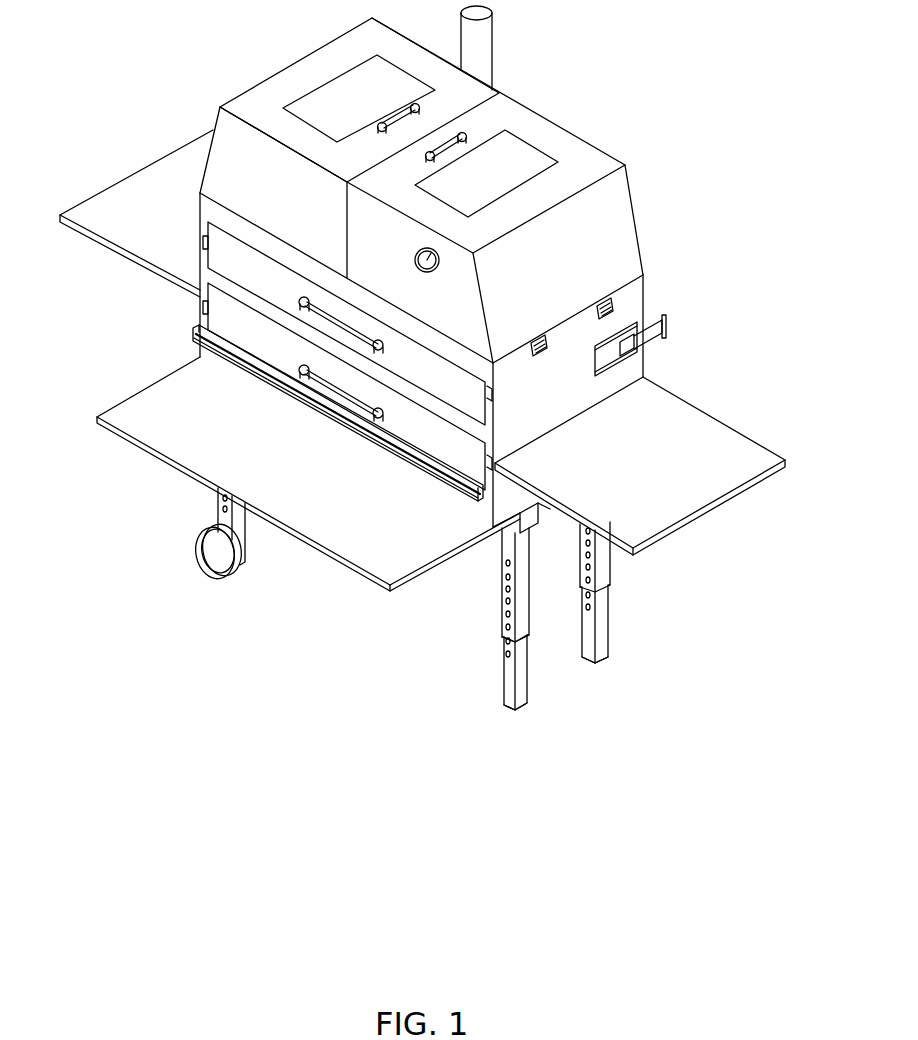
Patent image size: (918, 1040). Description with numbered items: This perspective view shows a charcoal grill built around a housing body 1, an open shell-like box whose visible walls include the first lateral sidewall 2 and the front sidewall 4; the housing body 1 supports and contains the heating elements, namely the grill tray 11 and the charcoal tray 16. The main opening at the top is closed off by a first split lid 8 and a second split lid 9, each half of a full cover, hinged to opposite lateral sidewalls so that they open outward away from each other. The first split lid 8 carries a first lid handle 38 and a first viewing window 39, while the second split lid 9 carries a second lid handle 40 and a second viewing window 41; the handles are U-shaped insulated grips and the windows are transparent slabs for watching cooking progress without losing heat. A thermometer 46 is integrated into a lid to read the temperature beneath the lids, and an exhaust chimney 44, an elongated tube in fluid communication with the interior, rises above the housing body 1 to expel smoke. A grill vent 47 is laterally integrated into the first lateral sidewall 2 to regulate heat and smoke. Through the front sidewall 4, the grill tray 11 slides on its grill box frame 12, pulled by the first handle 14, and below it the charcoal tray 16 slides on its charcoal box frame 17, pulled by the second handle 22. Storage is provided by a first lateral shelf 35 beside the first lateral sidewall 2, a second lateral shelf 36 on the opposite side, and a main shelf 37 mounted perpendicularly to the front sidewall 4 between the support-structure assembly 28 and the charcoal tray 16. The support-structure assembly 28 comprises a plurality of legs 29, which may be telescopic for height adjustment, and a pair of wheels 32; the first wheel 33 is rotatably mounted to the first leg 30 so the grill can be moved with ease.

The housing body 1 is at (690, 338).
The first lateral sidewall 2 is at (553, 424).
The front sidewall 4 is at (210, 210).
The first split lid 8 is at (630, 190).
The second split lid 9 is at (292, 77).
The grill tray 11 is at (216, 258).
The grill box frame 12 is at (480, 385).
The first handle 14 is at (378, 347).
The charcoal tray 16 is at (286, 407).
The charcoal box frame 17 is at (488, 456).
The second handle 22 is at (385, 412).
The support-structure assembly 28 is at (672, 594).
The plurality of legs 29 is at (586, 566).
The first leg 30 is at (222, 506).
The pair of wheels 32 is at (218, 552).
The first wheel 33 is at (212, 540).
The first lateral shelf 35 is at (720, 410).
The second lateral shelf 36 is at (130, 182).
The main shelf 37 is at (140, 398).
The first lid handle 38 is at (428, 158).
The first viewing window 39 is at (512, 186).
The second lid handle 40 is at (380, 130).
The second viewing window 41 is at (381, 74).
The exhaust chimney 44 is at (490, 42).
The thermometer 46 is at (418, 252).
The grill vent 47 is at (641, 342).